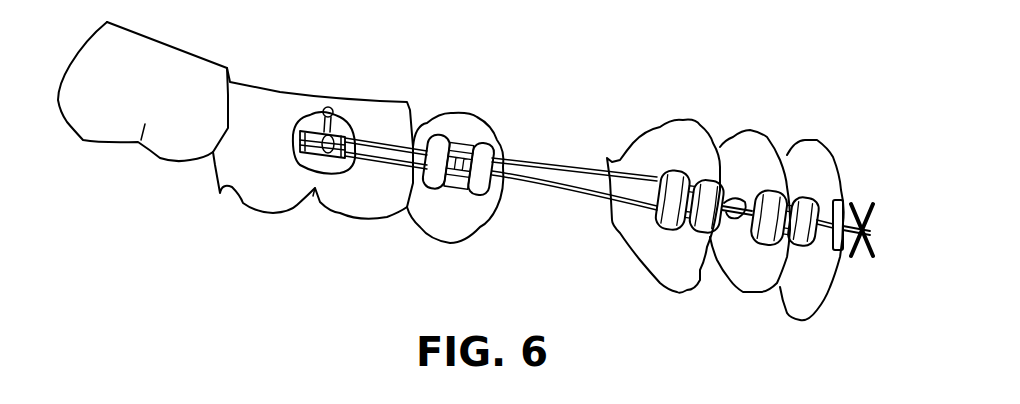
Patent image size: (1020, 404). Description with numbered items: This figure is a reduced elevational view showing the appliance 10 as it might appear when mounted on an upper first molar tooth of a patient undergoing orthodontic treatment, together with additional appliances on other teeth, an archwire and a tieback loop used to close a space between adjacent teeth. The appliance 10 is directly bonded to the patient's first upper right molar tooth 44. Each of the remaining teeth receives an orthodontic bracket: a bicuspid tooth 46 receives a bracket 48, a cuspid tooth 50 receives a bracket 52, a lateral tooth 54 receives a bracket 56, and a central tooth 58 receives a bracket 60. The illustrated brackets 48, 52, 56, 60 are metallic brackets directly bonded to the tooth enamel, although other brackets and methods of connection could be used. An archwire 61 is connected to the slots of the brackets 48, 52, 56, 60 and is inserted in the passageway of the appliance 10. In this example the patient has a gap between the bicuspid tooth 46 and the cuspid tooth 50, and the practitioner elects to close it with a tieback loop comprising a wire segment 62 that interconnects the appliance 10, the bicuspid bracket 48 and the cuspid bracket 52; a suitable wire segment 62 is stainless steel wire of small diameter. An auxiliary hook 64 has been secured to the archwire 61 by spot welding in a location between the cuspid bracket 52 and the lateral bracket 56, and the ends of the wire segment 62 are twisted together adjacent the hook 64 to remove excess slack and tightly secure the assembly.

The appliance 10 is at (285, 163).
The first upper right molar tooth 44 is at (340, 212).
The bicuspid tooth 46 is at (438, 227).
The bracket 48 is at (478, 152).
The cuspid tooth 50 is at (677, 275).
The bracket 52 is at (685, 177).
The lateral tooth 54 is at (742, 273).
The bracket 56 is at (800, 190).
The central tooth 58 is at (805, 295).
The bracket 60 is at (858, 207).
The archwire 61 is at (528, 177).
The wire segment 62 is at (530, 190).
The auxiliary hook 64 is at (743, 193).